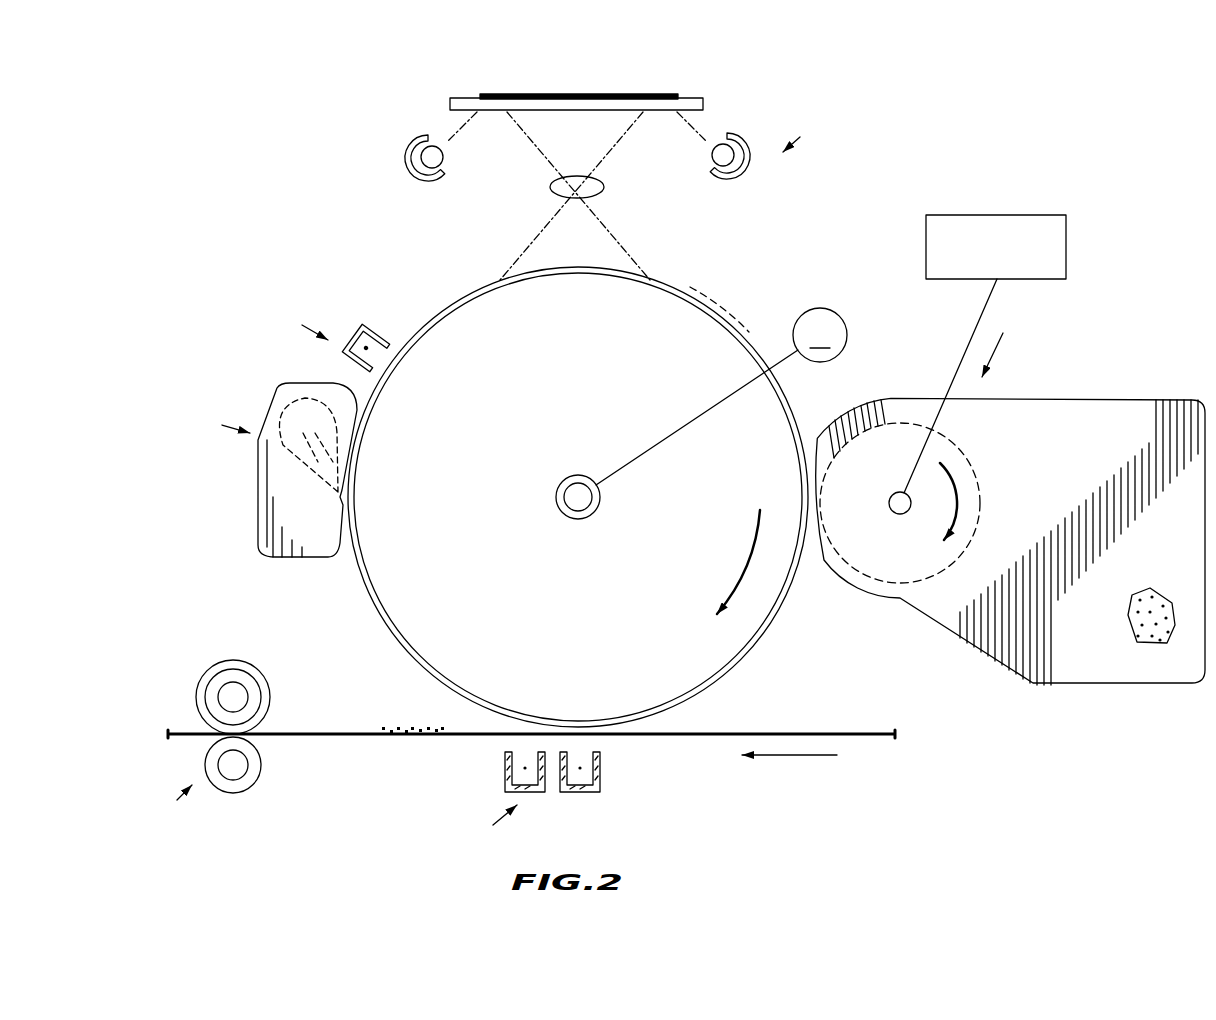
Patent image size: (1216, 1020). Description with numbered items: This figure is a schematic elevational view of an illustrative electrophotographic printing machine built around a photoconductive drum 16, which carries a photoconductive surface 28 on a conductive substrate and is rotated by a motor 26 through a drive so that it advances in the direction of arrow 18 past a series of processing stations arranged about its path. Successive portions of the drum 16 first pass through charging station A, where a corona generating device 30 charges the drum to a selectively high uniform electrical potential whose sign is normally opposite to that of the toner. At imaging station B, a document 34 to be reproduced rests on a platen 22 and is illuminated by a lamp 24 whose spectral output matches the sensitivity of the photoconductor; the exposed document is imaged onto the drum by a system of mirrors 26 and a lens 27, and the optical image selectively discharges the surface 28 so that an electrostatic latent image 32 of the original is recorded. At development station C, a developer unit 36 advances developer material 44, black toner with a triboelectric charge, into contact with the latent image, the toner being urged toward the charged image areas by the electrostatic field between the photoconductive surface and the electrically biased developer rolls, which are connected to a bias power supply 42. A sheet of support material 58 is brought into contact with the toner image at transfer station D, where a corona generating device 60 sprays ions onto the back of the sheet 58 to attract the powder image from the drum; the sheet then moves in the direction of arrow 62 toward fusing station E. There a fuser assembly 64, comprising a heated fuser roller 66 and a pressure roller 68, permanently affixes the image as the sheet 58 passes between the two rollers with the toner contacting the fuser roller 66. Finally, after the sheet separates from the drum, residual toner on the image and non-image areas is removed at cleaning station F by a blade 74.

The photoconductive drum 16 is at (665, 292).
The arrow 18 is at (750, 561).
The platen 22 is at (463, 102).
The lamp 24 is at (443, 163).
The motor / mirrors 26 is at (420, 180).
The lens 27 is at (557, 197).
The photoconductive surface 28 is at (753, 348).
The corona generating device 30 is at (370, 332).
The electrostatic latent image 32 is at (717, 298).
The document 34 is at (650, 93).
The developer unit 36 is at (1108, 382).
The bias power supply 42 is at (1045, 218).
The developer material 44 is at (1155, 643).
The sheet of support material 58 is at (405, 727).
The corona generating device 60 is at (598, 775).
The arrow 62 is at (803, 755).
The fuser assembly 64 is at (237, 711).
The heated fuser roller 66 is at (222, 665).
The pressure roller 68 is at (255, 782).
The blade 74 is at (337, 487).
The charging station A is at (301, 321).
The imaging station B is at (802, 128).
The development station C is at (1000, 339).
The transfer station D is at (493, 822).
The fusing station E is at (173, 807).
The cleaning station F is at (225, 419).